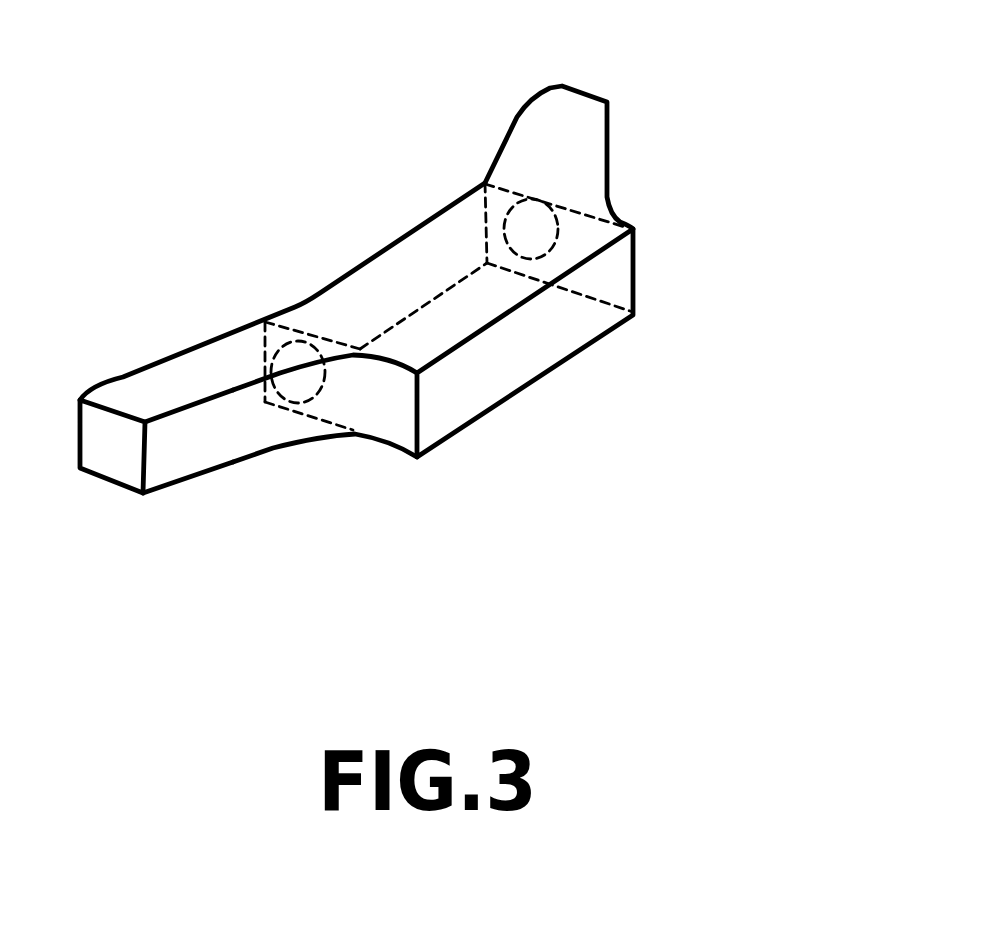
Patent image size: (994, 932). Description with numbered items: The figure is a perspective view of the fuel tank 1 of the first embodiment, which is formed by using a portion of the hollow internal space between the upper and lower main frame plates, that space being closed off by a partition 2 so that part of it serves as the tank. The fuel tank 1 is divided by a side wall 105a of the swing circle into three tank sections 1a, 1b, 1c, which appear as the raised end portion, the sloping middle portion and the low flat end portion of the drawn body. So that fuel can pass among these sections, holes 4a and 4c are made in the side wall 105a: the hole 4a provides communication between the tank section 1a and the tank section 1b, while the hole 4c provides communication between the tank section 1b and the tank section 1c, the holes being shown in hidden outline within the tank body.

The fuel tank 1 is at (608, 368).
The tank section 1a is at (528, 133).
The tank section 1b is at (390, 273).
The tank section 1c is at (157, 377).
The partition 2 is at (500, 372).
The hole 4a is at (537, 228).
The hole 4c is at (313, 402).
The side wall of the swing circle 105a is at (610, 283).